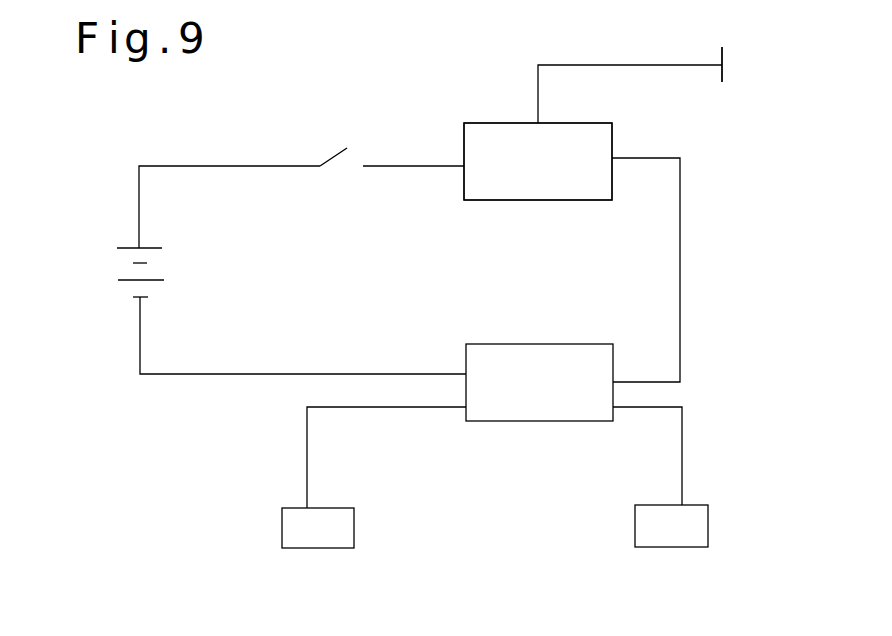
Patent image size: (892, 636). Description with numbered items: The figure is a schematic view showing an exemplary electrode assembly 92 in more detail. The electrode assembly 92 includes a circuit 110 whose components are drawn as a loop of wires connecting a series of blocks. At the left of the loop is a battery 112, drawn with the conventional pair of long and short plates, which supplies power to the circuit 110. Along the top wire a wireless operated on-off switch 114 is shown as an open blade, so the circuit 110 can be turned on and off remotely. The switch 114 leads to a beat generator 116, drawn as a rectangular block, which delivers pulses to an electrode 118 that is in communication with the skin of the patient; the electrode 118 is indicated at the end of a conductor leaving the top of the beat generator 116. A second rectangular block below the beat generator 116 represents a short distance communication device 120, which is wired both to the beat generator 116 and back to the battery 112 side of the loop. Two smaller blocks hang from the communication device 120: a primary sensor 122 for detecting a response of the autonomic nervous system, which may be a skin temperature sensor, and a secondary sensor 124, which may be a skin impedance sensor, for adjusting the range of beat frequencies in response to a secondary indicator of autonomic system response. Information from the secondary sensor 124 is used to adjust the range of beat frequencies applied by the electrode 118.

The electrode assembly 92 is at (427, 93).
The circuit 110 is at (195, 166).
The battery 112 is at (125, 281).
The wireless operated on-off switch 114 is at (329, 157).
The beat generator 116 is at (478, 190).
The electrode 118 is at (722, 82).
The short distance communication device 120 is at (536, 414).
The primary sensor 122 is at (680, 540).
The secondary sensor 124 is at (312, 541).